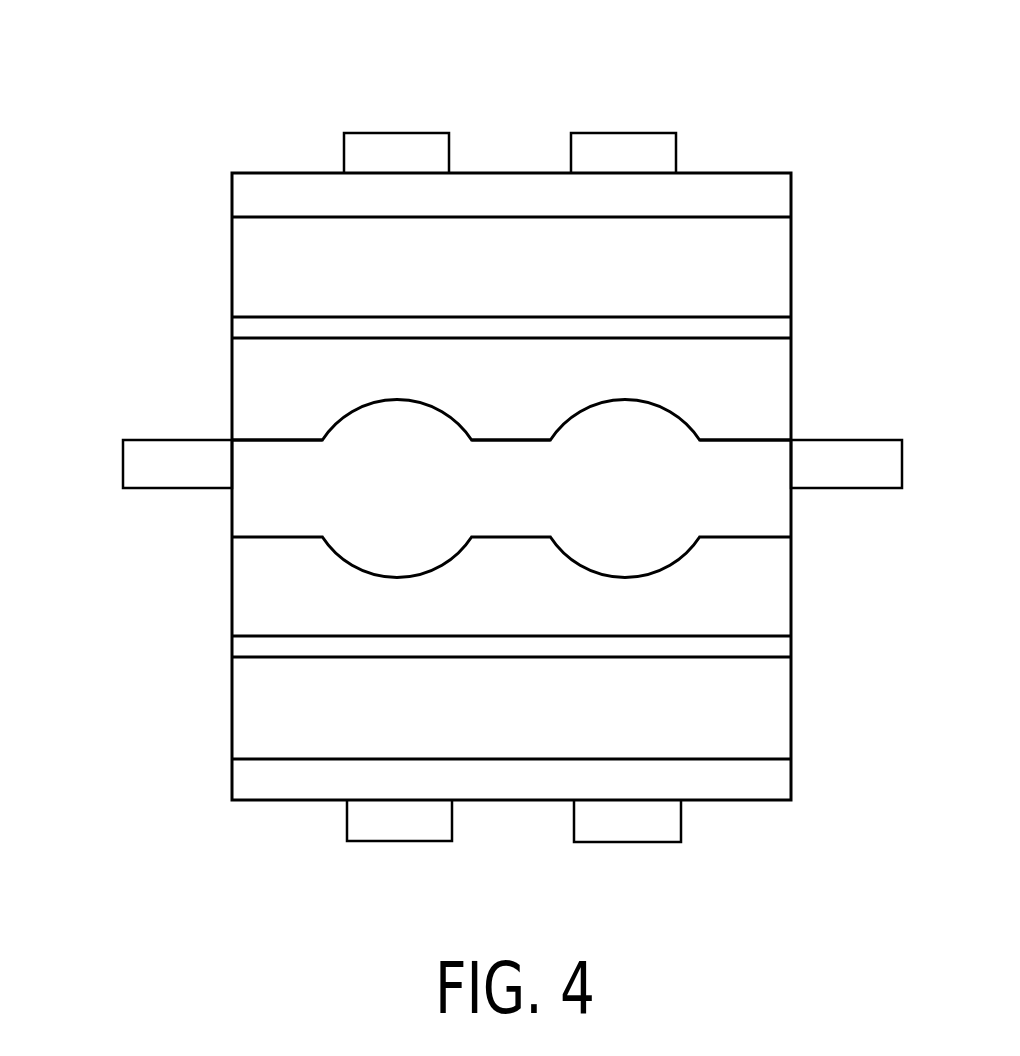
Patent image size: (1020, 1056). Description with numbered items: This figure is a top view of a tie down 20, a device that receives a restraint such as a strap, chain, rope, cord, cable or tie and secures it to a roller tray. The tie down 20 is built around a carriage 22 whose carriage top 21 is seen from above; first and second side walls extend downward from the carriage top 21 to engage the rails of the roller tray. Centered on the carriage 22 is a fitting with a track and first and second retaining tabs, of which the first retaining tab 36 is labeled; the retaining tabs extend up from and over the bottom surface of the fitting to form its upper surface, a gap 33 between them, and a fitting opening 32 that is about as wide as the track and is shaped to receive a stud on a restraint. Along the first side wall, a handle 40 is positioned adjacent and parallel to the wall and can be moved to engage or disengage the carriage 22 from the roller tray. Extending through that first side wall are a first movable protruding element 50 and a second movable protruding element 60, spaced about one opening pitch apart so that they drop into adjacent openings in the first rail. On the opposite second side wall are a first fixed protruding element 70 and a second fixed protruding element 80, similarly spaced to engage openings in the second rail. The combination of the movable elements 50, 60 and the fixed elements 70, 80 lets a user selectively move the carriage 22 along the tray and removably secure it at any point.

The tie down 20 is at (142, 32).
The carriage top 21 is at (252, 248).
The carriage 22 is at (214, 744).
The fitting opening 32 is at (658, 483).
The gap 33 is at (275, 483).
The first retaining tab 36 is at (292, 422).
The handle 40 is at (142, 460).
The first movable protruding element 50 is at (638, 145).
The second movable protruding element 60 is at (395, 147).
The first fixed protruding element 70 is at (640, 830).
The second fixed protruding element 80 is at (368, 830).